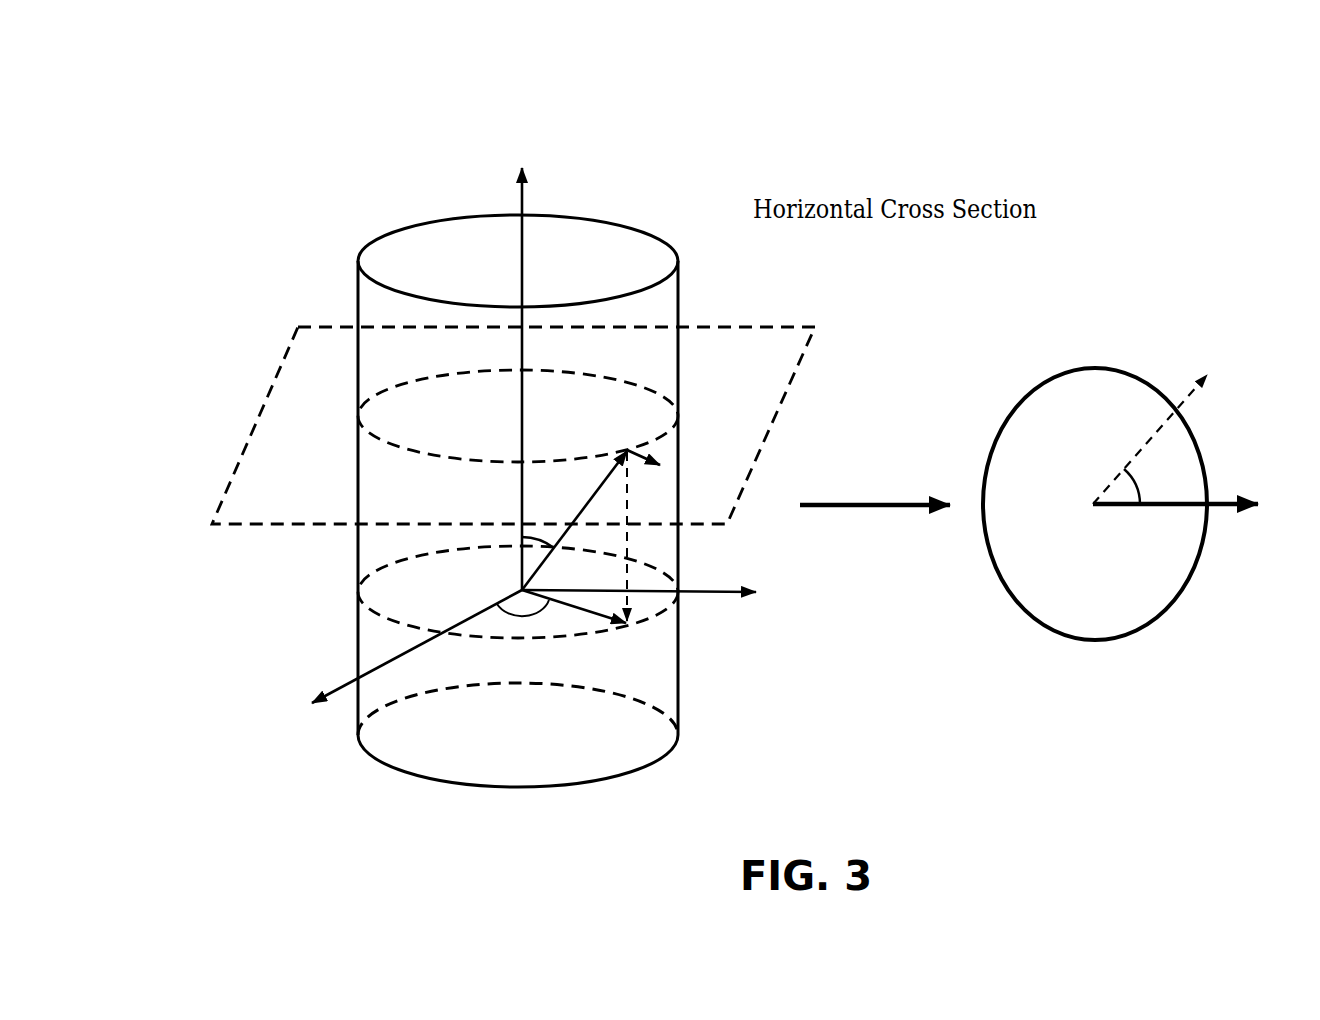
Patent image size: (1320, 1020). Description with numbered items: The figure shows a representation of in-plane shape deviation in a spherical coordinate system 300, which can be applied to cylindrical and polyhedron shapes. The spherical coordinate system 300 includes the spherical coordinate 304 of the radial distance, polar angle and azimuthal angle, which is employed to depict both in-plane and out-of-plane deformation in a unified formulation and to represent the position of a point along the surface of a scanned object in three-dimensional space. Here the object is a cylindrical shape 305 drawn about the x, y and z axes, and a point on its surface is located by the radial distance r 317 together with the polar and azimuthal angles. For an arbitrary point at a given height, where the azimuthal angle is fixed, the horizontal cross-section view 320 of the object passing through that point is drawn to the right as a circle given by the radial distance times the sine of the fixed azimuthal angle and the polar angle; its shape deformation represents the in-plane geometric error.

The spherical coordinate system 300 is at (424, 100).
The spherical coordinate 304 is at (896, 516).
The cylindrical shape 305 is at (450, 250).
The radial distance 317 is at (568, 482).
The horizontal cross-section view 320 is at (1016, 628).